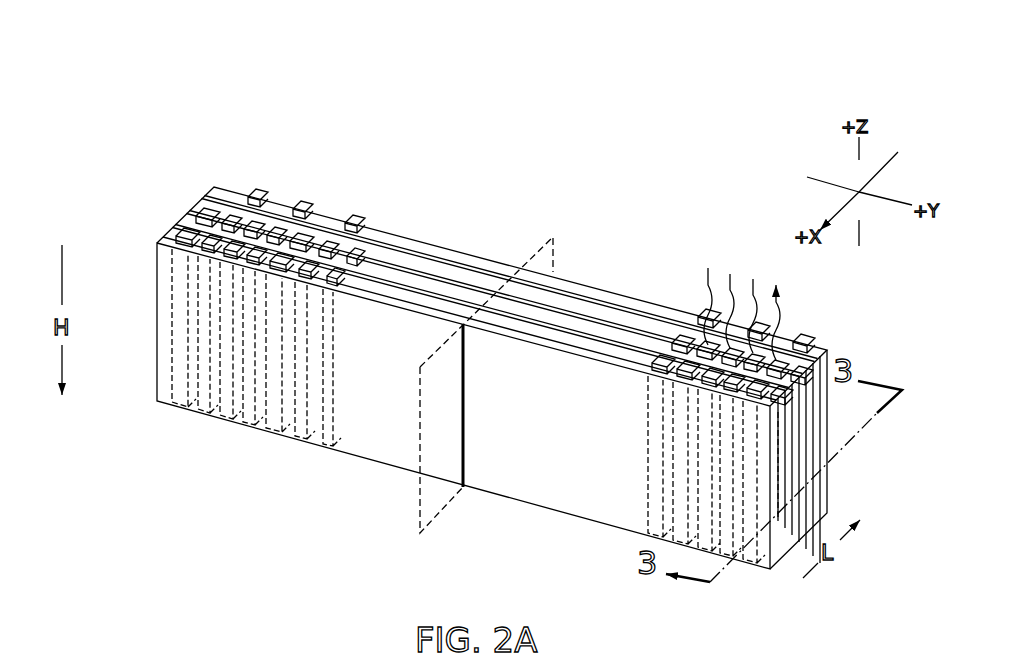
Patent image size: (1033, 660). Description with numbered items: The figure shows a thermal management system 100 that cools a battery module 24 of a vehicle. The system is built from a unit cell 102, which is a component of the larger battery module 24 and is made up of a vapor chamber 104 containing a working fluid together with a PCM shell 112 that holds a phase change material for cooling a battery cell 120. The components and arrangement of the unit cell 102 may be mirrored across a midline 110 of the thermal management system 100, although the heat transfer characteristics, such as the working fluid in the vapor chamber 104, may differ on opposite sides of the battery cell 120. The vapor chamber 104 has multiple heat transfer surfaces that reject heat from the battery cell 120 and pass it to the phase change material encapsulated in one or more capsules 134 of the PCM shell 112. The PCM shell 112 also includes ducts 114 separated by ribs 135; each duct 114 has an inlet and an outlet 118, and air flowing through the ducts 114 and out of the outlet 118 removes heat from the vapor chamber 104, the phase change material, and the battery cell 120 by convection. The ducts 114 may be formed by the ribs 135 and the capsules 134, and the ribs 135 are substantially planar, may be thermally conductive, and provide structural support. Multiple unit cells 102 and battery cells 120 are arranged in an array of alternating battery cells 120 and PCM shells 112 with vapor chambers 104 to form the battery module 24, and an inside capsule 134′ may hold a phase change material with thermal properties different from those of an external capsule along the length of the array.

The thermal management system 100 is at (190, 103).
The unit cell 102 is at (180, 175).
The vapor chamber 104 is at (164, 387).
The midline 110 is at (553, 237).
The PCM shell 112 is at (172, 226).
The duct 114 is at (308, 223).
The outlet 118 is at (272, 257).
The battery cell 120 is at (425, 295).
The capsule 134 is at (333, 233).
The inside capsule 134′ is at (652, 357).
The rib 135 is at (297, 163).
The battery module 24 is at (690, 215).